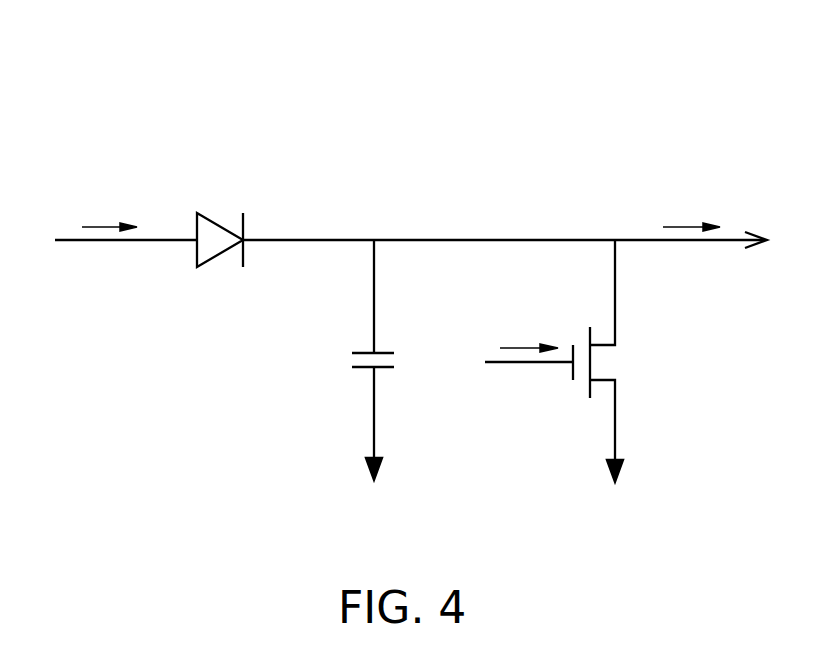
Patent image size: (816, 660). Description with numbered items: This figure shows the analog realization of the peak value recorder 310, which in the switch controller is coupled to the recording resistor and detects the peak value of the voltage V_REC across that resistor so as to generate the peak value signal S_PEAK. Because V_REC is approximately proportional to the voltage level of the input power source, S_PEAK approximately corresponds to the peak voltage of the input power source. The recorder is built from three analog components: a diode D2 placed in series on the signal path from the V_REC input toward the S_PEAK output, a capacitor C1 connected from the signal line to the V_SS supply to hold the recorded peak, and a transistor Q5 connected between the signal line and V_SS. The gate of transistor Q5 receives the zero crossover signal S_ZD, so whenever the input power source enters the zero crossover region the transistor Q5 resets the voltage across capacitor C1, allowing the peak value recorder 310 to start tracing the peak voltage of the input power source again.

The peak value recorder 310 is at (170, 113).
The diode D2 is at (220, 226).
The capacitor C1 is at (357, 360).
The transistor Q5 is at (612, 362).